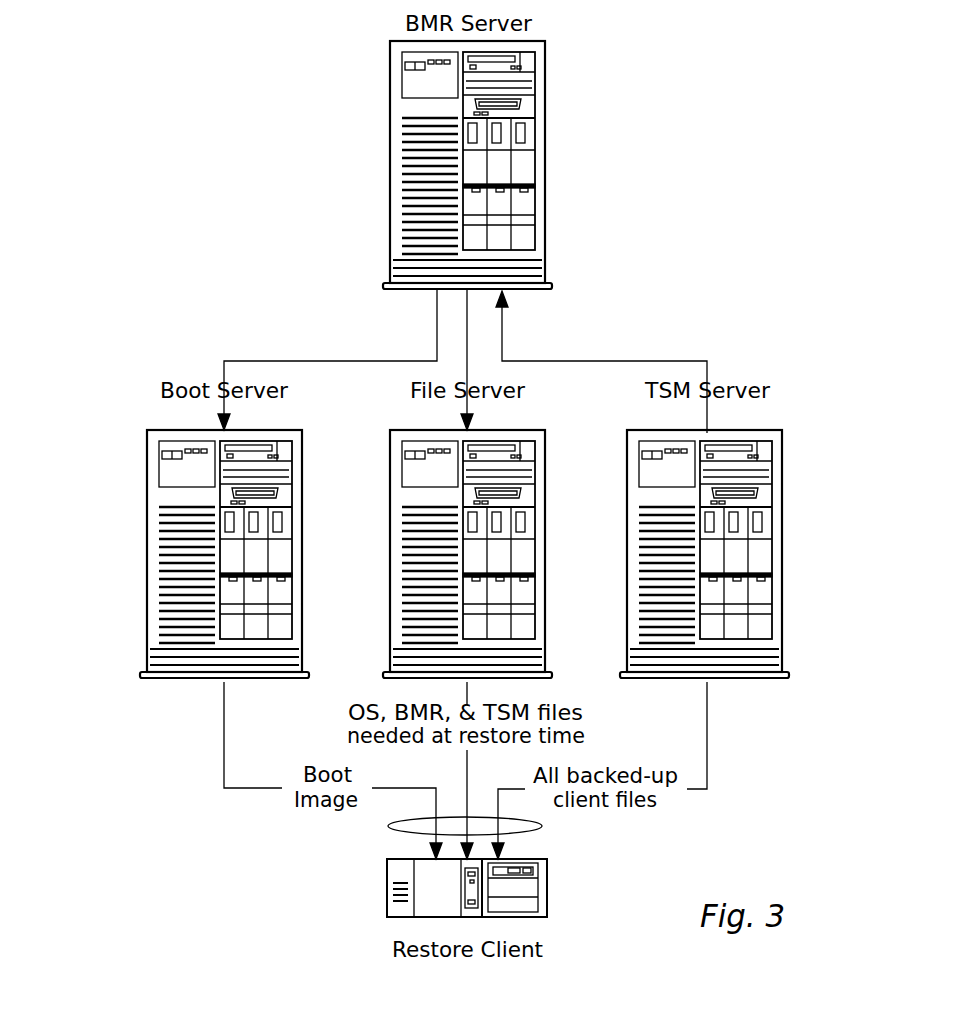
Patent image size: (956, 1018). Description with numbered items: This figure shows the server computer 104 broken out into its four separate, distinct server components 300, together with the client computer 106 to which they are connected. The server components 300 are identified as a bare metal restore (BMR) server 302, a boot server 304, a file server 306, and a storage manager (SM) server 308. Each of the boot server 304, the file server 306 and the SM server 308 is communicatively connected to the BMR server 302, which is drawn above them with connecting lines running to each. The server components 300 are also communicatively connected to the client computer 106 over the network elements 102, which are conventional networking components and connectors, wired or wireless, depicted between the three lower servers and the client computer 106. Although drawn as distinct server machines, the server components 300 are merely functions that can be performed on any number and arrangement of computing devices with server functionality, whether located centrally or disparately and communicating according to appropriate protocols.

The server components 300 is at (649, 65).
The bare metal restore (BMR) server 302 is at (545, 165).
The boot server 304 is at (305, 558).
The file server 306 is at (545, 558).
The storage manager (SM) server 308 is at (782, 558).
The server computer 104 is at (113, 38).
The network elements 102 is at (537, 830).
The client computer 106 is at (547, 897).